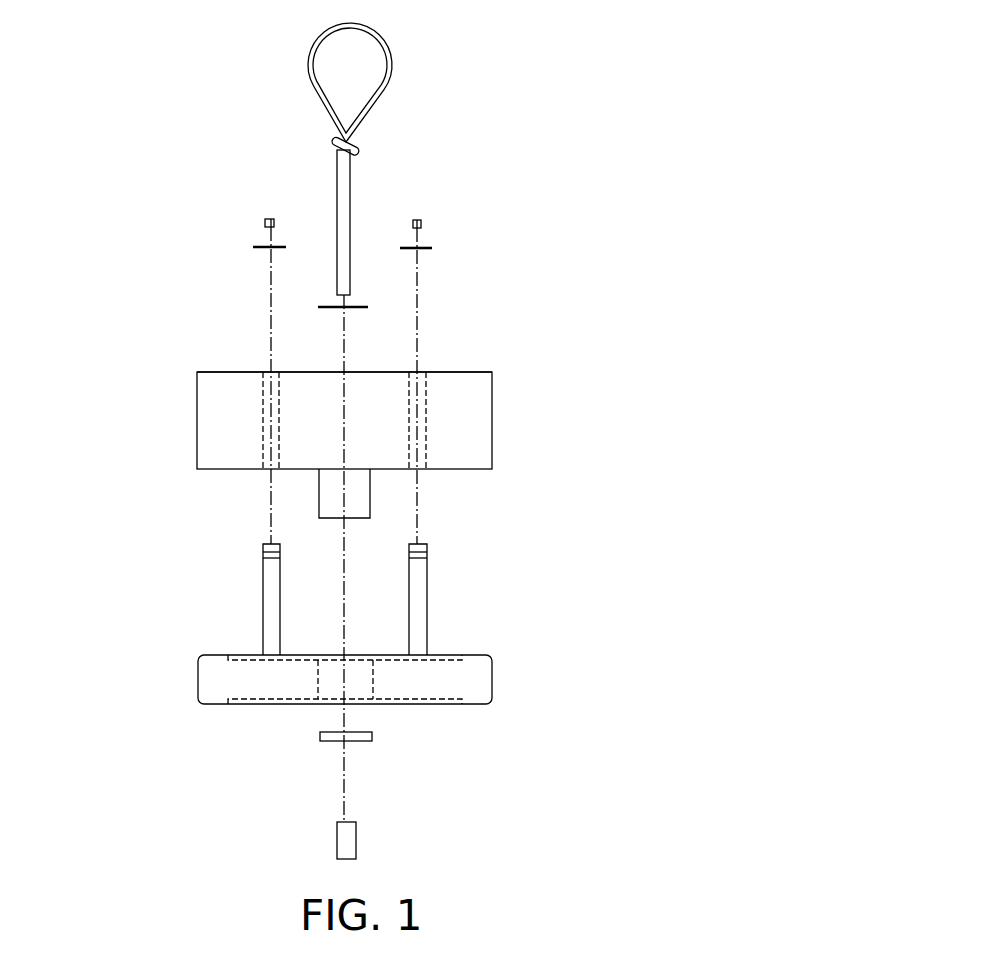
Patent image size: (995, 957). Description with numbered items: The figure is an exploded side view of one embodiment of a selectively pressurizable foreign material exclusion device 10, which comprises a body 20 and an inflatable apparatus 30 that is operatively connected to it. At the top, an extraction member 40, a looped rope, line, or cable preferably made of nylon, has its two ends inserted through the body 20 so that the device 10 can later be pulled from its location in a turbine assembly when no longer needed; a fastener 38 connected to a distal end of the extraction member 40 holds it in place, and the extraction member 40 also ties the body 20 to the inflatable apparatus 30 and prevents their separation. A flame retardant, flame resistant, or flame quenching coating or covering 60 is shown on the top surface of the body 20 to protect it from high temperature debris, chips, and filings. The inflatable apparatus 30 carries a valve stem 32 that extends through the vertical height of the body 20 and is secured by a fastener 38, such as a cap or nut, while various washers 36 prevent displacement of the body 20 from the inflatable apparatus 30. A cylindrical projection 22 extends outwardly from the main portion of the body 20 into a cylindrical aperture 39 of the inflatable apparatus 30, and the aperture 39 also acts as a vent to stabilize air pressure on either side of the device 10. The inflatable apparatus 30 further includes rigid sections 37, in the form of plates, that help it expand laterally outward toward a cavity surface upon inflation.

The selectively pressurizable foreign material exclusion device 10 is at (462, 441).
The body 20 is at (434, 420).
The projection 22 is at (454, 499).
The inflatable apparatus 30 is at (424, 715).
The valve stem 32 is at (251, 590).
The washers 36 is at (344, 520).
The rigid sections 37 is at (304, 681).
The fastener 38 is at (326, 509).
The aperture 39 is at (301, 725).
The extraction member 40 is at (410, 153).
The flame retardant coating or covering 60 is at (263, 320).